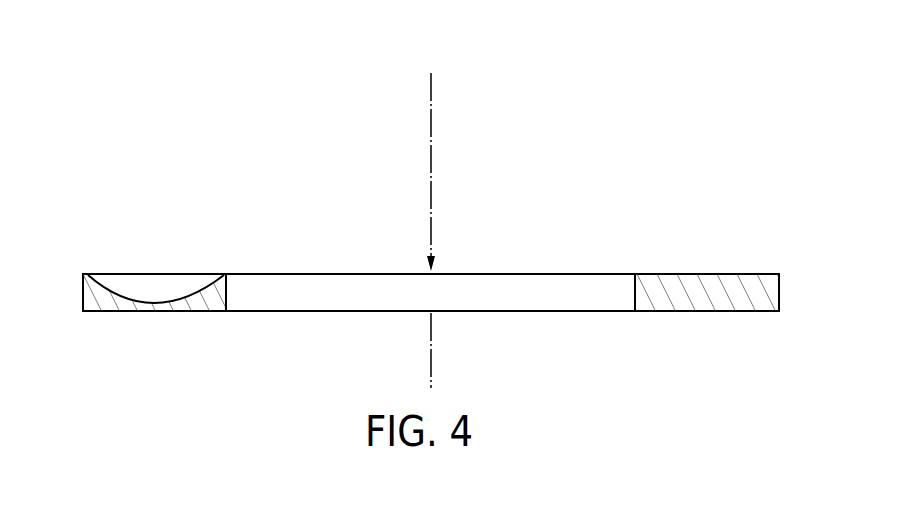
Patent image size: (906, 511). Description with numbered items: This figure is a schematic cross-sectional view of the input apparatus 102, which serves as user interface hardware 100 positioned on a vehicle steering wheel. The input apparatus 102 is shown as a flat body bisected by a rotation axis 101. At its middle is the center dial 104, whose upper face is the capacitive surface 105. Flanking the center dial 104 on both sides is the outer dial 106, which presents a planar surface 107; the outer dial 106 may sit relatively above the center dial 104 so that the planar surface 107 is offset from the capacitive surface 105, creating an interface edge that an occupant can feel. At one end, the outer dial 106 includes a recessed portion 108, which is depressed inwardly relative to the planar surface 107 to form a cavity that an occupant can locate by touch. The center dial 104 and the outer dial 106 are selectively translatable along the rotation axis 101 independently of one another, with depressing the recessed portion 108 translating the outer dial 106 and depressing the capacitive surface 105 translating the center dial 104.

The user interface hardware 100 is at (646, 105).
The rotation axis 101 is at (432, 128).
The input apparatus 102 is at (104, 190).
The center dial 104 is at (523, 283).
The capacitive surface 105 is at (313, 273).
The outer dial 106 is at (717, 283).
The planar surface 107 is at (648, 273).
The recessed portion 108 is at (132, 283).